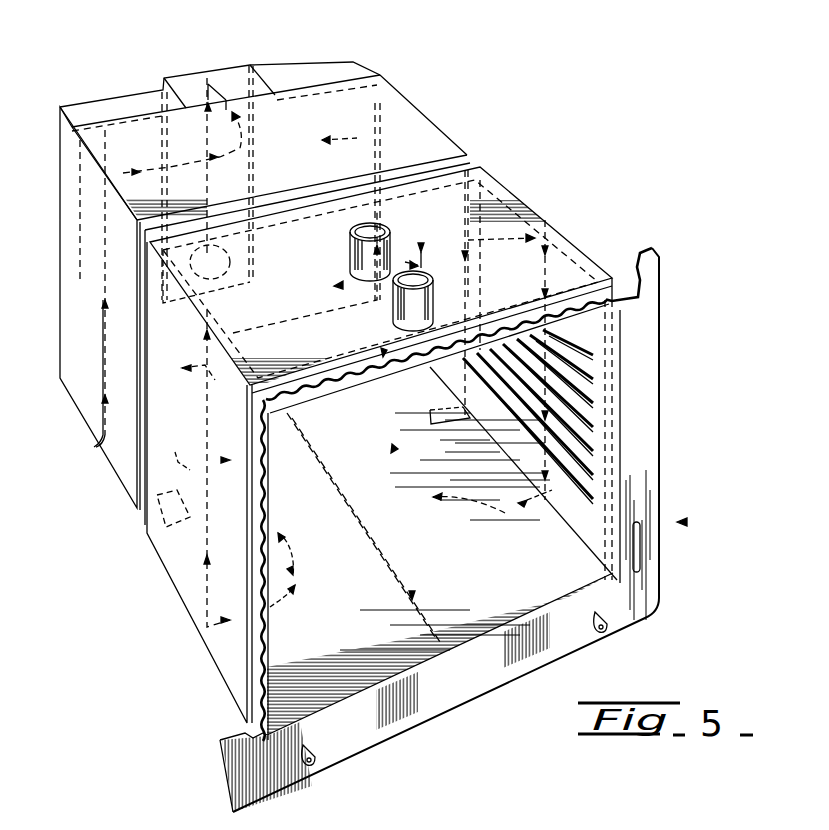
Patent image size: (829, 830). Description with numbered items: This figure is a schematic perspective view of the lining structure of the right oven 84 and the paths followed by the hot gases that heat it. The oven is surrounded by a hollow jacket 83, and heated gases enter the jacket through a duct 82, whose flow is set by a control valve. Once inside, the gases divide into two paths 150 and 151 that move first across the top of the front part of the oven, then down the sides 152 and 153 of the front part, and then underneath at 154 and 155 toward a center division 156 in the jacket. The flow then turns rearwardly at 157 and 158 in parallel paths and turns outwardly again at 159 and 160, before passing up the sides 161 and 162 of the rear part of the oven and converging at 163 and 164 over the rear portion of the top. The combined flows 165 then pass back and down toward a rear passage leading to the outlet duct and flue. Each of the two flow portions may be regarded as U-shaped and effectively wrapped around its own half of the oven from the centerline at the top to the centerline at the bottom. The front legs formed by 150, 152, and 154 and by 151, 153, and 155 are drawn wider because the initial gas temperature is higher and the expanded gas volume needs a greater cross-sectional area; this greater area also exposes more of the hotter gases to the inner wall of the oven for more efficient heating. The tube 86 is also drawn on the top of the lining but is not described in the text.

The duct 82 is at (353, 243).
The hollow jacket 83 is at (470, 203).
The right oven 84 is at (677, 522).
The second tube 86 is at (433, 290).
The flow path 150 is at (345, 283).
The flow path 151 is at (405, 262).
The side of the front part of the oven 152 is at (207, 583).
The side of the front part of the oven 153 is at (547, 262).
The underneath flow portion 154 is at (270, 607).
The underneath flow portion 155 is at (505, 513).
The center division 156 is at (412, 600).
The rearward flow turn 157 is at (280, 538).
The rearward flow turn 158 is at (392, 444).
The outward flow turn 159 is at (108, 435).
The outward flow turn 160 is at (381, 357).
The side of the rear part of the oven 161 is at (103, 272).
The side of the rear part of the oven 162 is at (427, 155).
The converging flow 163 is at (124, 172).
The converging flow 164 is at (357, 138).
The combined flows 165 is at (227, 98).